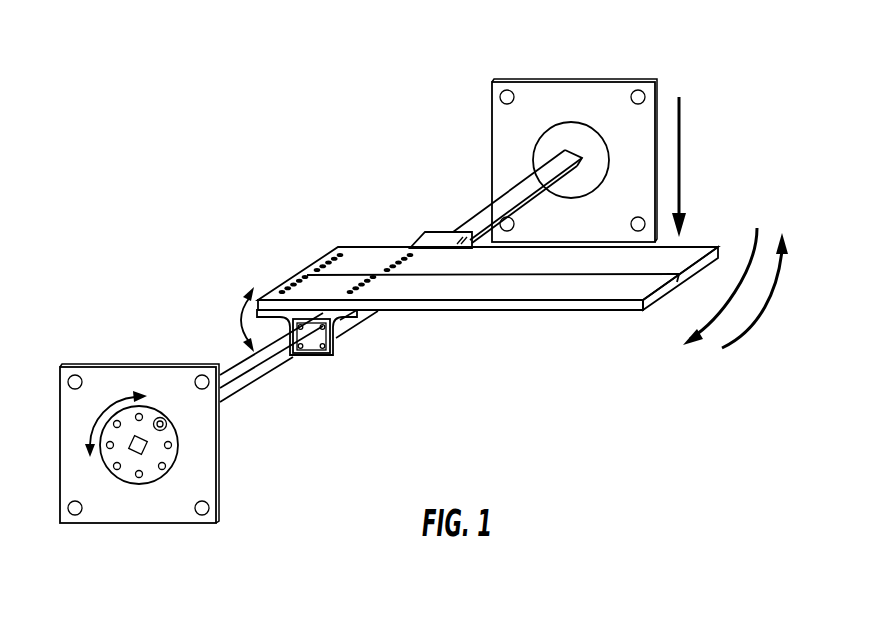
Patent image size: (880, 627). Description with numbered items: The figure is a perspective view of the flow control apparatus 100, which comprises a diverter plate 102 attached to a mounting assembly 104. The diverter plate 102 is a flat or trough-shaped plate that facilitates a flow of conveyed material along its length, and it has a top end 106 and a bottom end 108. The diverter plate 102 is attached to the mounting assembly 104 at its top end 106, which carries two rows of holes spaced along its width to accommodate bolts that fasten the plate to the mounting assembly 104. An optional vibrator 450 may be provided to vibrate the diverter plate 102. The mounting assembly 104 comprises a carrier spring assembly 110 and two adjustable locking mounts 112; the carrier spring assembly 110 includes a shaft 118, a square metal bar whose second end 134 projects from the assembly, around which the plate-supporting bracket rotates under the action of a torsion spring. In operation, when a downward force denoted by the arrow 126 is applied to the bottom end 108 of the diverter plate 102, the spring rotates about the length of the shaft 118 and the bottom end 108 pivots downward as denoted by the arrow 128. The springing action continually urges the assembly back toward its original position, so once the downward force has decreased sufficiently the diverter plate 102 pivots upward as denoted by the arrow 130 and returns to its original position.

The flow control apparatus 100 is at (307, 248).
The diverter plate 102 is at (694, 232).
The mounting assembly 104 is at (310, 375).
The top end 106 is at (280, 290).
The bottom end 108 is at (647, 315).
The carrier spring assembly 110 is at (435, 222).
The adjustable locking mounts 112 is at (547, 70).
The shaft 118 is at (233, 365).
The arrow denoting downward force 126 is at (677, 150).
The arrow denoting downward pivoting 128 is at (727, 271).
The arrow denoting upward pivoting 130 is at (737, 307).
The second end 134 is at (545, 158).
The vibrator 450 is at (348, 320).